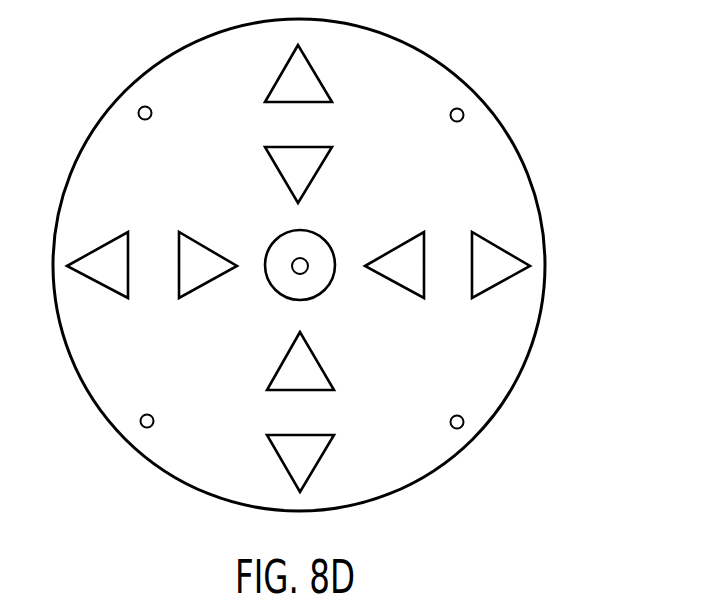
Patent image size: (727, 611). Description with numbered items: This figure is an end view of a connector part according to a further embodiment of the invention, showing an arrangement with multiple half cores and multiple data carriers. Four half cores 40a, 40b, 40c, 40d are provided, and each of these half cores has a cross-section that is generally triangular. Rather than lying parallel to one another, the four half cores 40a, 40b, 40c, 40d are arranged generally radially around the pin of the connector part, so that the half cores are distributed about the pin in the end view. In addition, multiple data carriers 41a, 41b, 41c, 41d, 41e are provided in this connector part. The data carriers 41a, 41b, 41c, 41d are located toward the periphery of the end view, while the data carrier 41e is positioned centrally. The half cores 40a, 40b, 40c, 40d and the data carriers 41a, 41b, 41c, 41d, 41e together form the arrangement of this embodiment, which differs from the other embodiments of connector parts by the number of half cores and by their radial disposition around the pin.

The half core 40a is at (114, 243).
The half core 40b is at (288, 77).
The half core 40c is at (409, 252).
The half core 40d is at (293, 362).
The data carrier 41a is at (140, 112).
The data carrier 41b is at (460, 112).
The data carrier 41c is at (460, 425).
The data carrier 41d is at (143, 424).
The data carrier 41e is at (305, 272).